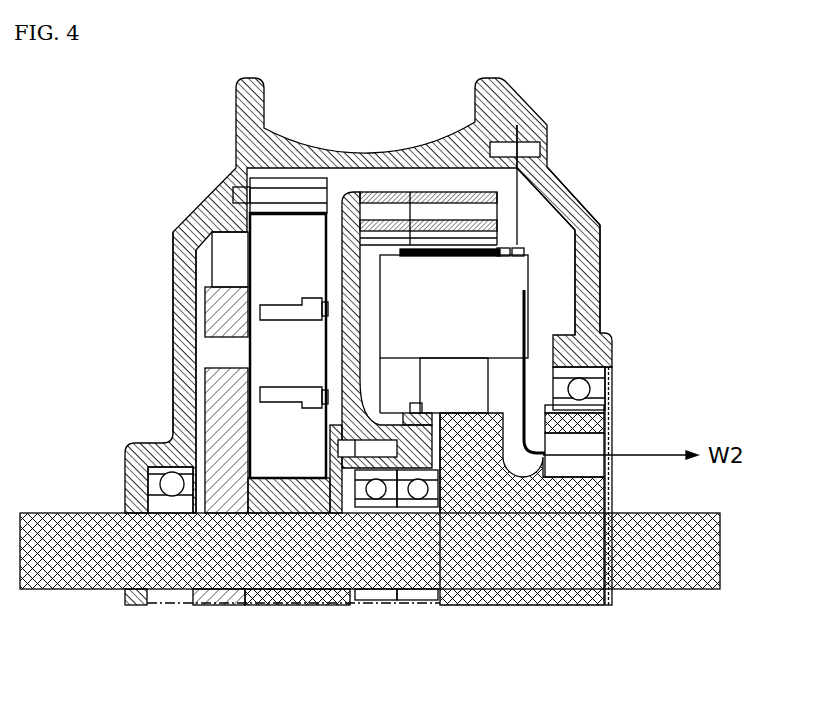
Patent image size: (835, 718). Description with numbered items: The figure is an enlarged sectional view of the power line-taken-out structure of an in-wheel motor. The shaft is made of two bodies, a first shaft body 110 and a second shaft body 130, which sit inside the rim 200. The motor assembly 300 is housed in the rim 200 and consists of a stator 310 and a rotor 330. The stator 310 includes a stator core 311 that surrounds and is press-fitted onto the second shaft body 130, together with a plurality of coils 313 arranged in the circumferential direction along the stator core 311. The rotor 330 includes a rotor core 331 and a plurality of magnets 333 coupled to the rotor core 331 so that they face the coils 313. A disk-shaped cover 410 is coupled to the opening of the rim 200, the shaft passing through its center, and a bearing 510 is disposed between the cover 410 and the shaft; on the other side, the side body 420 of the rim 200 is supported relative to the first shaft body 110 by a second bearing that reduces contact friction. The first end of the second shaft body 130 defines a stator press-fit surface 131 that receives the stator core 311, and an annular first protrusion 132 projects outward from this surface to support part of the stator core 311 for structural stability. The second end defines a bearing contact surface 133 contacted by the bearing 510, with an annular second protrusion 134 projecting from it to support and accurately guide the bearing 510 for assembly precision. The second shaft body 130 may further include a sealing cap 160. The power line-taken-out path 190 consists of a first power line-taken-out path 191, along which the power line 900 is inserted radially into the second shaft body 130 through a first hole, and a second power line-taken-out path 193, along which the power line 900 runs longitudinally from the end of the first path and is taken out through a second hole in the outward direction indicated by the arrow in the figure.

The first shaft body 110 is at (670, 565).
The second shaft body 130 is at (482, 463).
The stator press-fit surface 131 is at (447, 440).
The first protrusion 132 is at (448, 453).
The bearing contact surface 133 is at (597, 425).
The second protrusion 134 is at (547, 408).
The sealing cap 160 is at (612, 495).
The power line-taken-out path 190 is at (551, 497).
The first power line-taken-out path 191 is at (520, 460).
The second power line-taken-out path 193 is at (583, 467).
The rim 200 is at (246, 147).
The motor assembly 300 is at (586, 263).
The stator 310 is at (567, 291).
The stator core 311 is at (600, 328).
The coils 313 is at (478, 273).
The rotor 330 is at (557, 215).
The rotor core 331 is at (413, 242).
The magnets 333 is at (527, 254).
The cover 410 is at (555, 190).
The side body 420 is at (182, 333).
The bearing 510 is at (580, 388).
The power line 900 is at (447, 367).